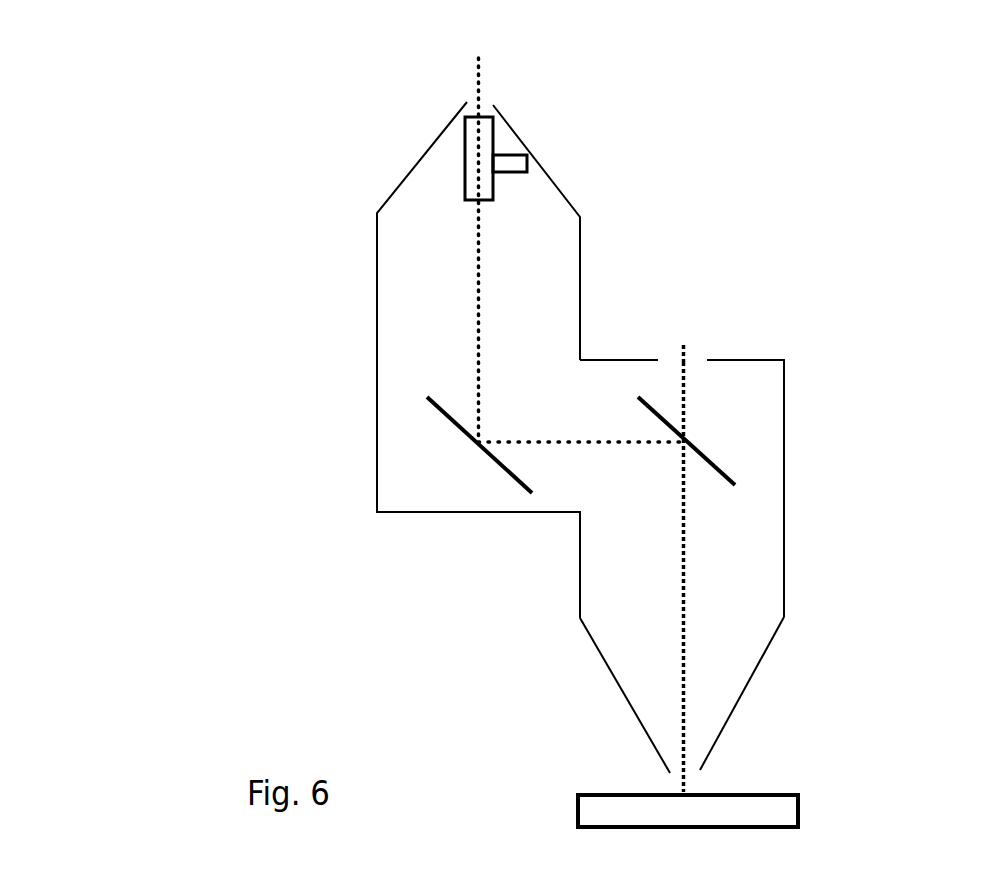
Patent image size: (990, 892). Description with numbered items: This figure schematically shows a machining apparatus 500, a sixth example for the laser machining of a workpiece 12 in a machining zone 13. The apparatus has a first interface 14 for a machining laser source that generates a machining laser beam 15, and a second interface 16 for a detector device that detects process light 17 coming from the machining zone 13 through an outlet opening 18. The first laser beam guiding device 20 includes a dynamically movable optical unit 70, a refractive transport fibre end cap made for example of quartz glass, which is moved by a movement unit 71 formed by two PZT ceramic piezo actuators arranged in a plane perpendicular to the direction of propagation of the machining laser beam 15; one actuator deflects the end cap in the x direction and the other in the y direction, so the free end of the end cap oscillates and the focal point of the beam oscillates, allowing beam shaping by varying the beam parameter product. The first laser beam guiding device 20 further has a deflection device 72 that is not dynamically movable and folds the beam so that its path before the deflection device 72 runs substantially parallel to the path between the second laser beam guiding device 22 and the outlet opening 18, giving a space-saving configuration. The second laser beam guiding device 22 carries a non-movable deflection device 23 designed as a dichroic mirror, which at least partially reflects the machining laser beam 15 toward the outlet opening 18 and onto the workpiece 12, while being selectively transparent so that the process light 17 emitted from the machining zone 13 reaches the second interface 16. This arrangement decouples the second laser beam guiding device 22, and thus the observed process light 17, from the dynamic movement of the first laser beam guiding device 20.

The machining apparatus 500 is at (232, 130).
The workpiece 12 is at (787, 805).
The machining zone 13 is at (703, 790).
The first interface 14 is at (505, 108).
The machining laser beam 15 is at (478, 222).
The second interface 16 is at (698, 327).
The process light 17 is at (687, 388).
The outlet opening 18 is at (657, 773).
The first laser beam guiding device 20 is at (232, 313).
The second laser beam guiding device 22 is at (737, 462).
The non-movable deflection device 23 is at (690, 446).
The dynamically movable optical unit 70 is at (472, 158).
The movement unit 71 is at (527, 170).
The deflection device 72 is at (450, 414).